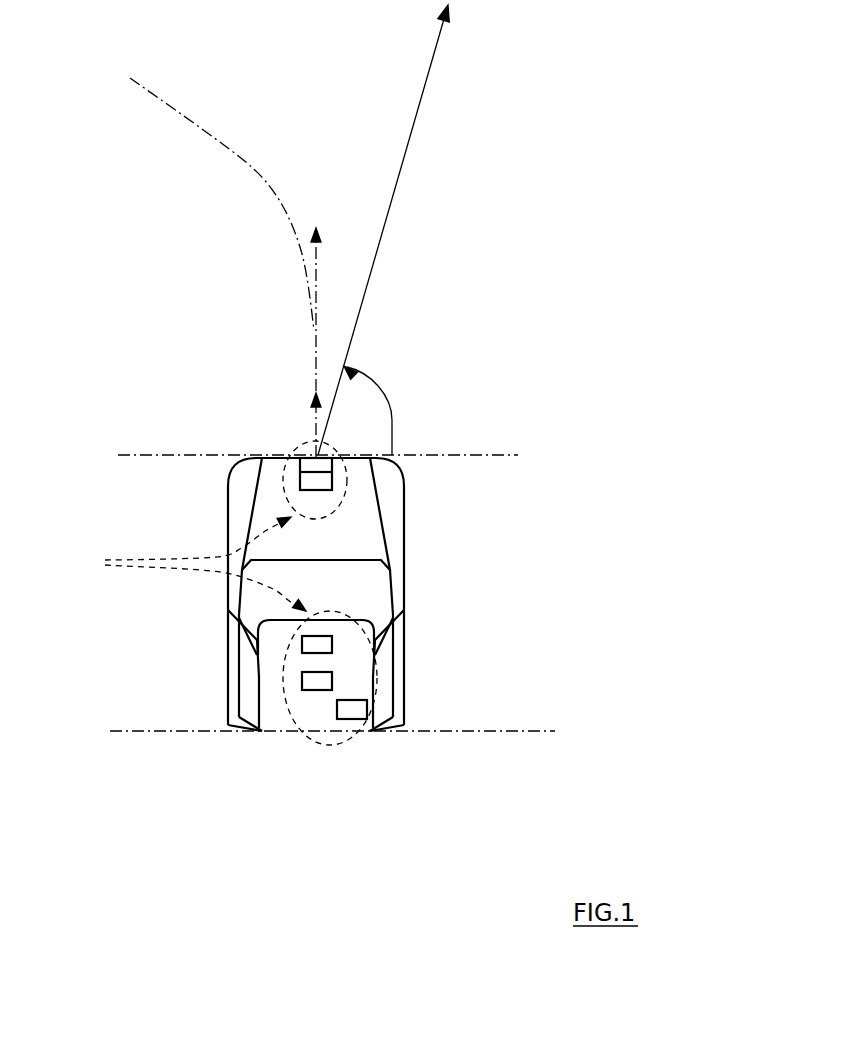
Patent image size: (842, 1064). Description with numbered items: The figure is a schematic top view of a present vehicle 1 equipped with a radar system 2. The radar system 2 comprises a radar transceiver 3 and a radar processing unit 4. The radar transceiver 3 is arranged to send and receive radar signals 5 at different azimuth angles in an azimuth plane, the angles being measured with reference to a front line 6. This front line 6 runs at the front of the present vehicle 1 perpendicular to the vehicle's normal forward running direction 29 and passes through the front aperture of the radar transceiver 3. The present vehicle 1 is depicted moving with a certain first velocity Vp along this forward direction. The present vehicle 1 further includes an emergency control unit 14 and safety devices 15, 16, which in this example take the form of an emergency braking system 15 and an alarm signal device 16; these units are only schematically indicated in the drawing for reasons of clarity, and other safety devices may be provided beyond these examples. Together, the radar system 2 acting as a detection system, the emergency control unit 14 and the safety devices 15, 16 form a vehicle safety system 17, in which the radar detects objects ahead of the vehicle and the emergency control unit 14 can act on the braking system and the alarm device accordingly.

The present vehicle 1 is at (327, 587).
The radar system 2 is at (293, 457).
The radar transceiver 3 is at (315, 465).
The radar processing unit 4 is at (312, 483).
The radar signals 5 is at (410, 138).
The front line 6 is at (497, 455).
The emergency control unit 14 is at (315, 648).
The emergency braking system 15 is at (315, 682).
The alarm signal device 16 is at (348, 712).
The vehicle safety system 17 is at (192, 564).
The normal forward running direction 29 is at (199, 196).
The first velocity Vp is at (315, 420).